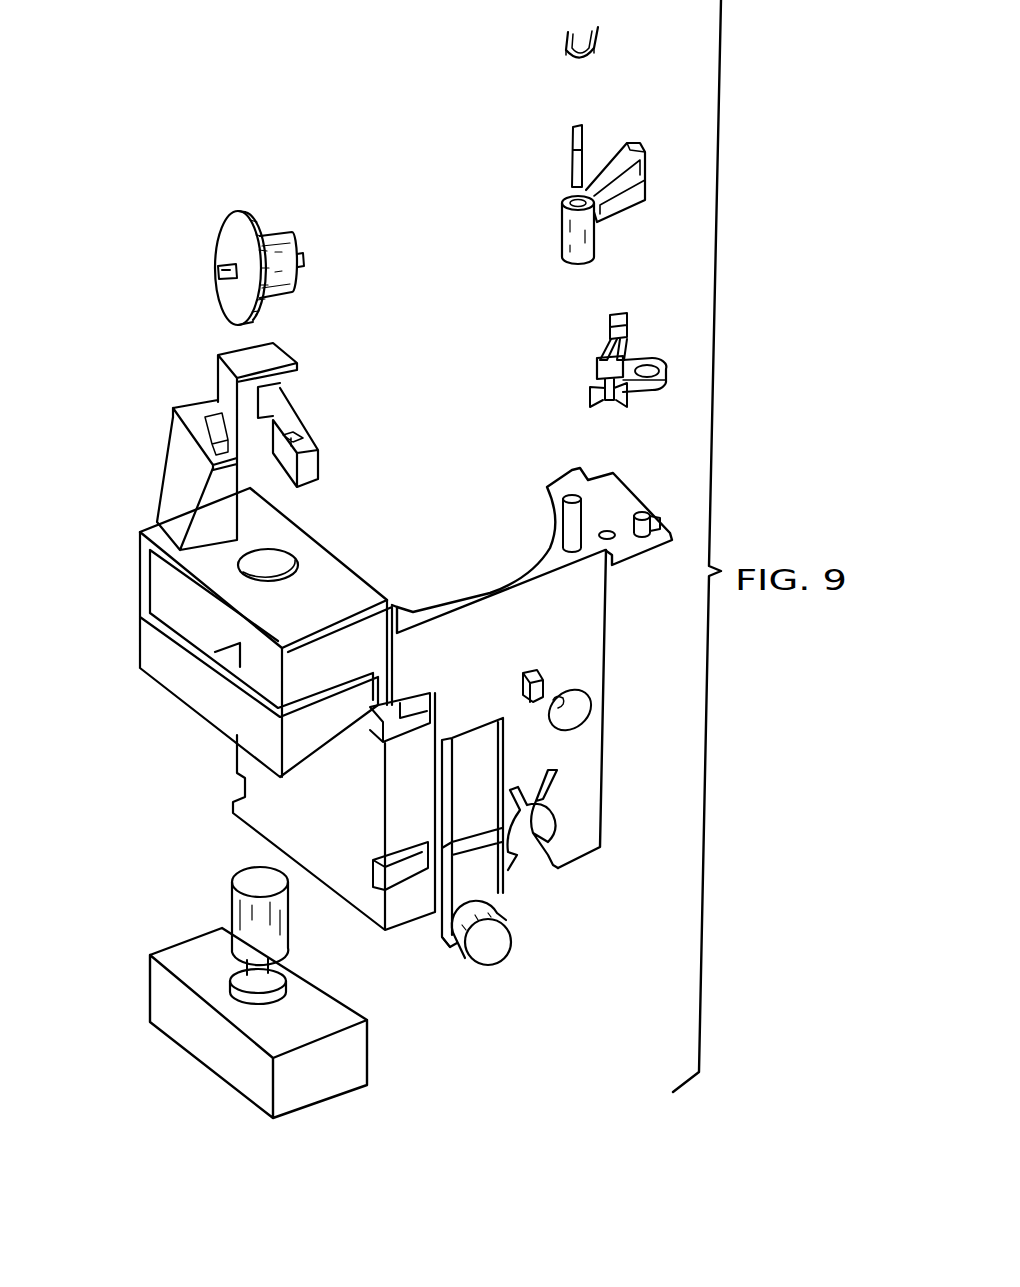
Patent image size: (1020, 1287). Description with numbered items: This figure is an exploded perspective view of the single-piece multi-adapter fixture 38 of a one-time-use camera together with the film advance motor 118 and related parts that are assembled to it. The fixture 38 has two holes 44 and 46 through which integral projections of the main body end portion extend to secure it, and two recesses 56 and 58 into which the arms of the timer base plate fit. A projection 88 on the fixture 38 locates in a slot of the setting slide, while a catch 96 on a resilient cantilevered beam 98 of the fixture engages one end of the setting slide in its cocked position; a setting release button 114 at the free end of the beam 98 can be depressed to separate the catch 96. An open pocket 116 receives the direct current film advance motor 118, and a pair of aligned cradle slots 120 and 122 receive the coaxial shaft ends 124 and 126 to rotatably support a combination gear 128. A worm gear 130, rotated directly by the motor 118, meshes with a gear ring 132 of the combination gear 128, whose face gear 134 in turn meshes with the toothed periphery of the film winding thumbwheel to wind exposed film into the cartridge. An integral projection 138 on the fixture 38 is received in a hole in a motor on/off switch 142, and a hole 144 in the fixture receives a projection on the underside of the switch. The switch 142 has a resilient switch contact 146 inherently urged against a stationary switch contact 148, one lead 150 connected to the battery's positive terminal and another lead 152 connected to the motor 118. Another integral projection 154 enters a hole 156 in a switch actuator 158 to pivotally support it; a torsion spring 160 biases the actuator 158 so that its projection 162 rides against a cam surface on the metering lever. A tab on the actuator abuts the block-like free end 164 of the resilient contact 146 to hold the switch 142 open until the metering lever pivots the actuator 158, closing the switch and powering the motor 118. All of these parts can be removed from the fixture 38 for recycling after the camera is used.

The multi-adapter fixture 38 is at (543, 728).
The hole 44 is at (577, 713).
The hole 46 is at (530, 825).
The recess 56 is at (377, 720).
The recess 58 is at (380, 860).
The projection 88 is at (533, 670).
The catch 96 is at (477, 847).
The resilient cantilevered beam 98 is at (475, 737).
The setting release button 114 is at (503, 947).
The open pocket 116 is at (256, 709).
The film advance motor 118 is at (210, 1055).
The cradle slot 120 is at (212, 457).
The cradle slot 122 is at (303, 428).
The shaft end 124 is at (222, 275).
The shaft end 126 is at (305, 258).
The combination gear 128 is at (262, 233).
The worm gear 130 is at (227, 900).
The gear ring 132 is at (228, 212).
The face gear 134 is at (290, 237).
The integral projection 138 is at (646, 512).
The motor on/off switch 142 is at (607, 365).
The hole 144 is at (616, 540).
The resilient switch contact 146 is at (605, 343).
The stationary switch contact 148 is at (627, 343).
The lead 150 is at (617, 397).
The lead 152 is at (590, 403).
The integral projection 154 is at (567, 515).
The hole 156 is at (577, 200).
The switch actuator 158 is at (548, 213).
The torsion spring 160 is at (602, 37).
The projection 162 is at (570, 137).
The block-like free end 164 is at (617, 315).